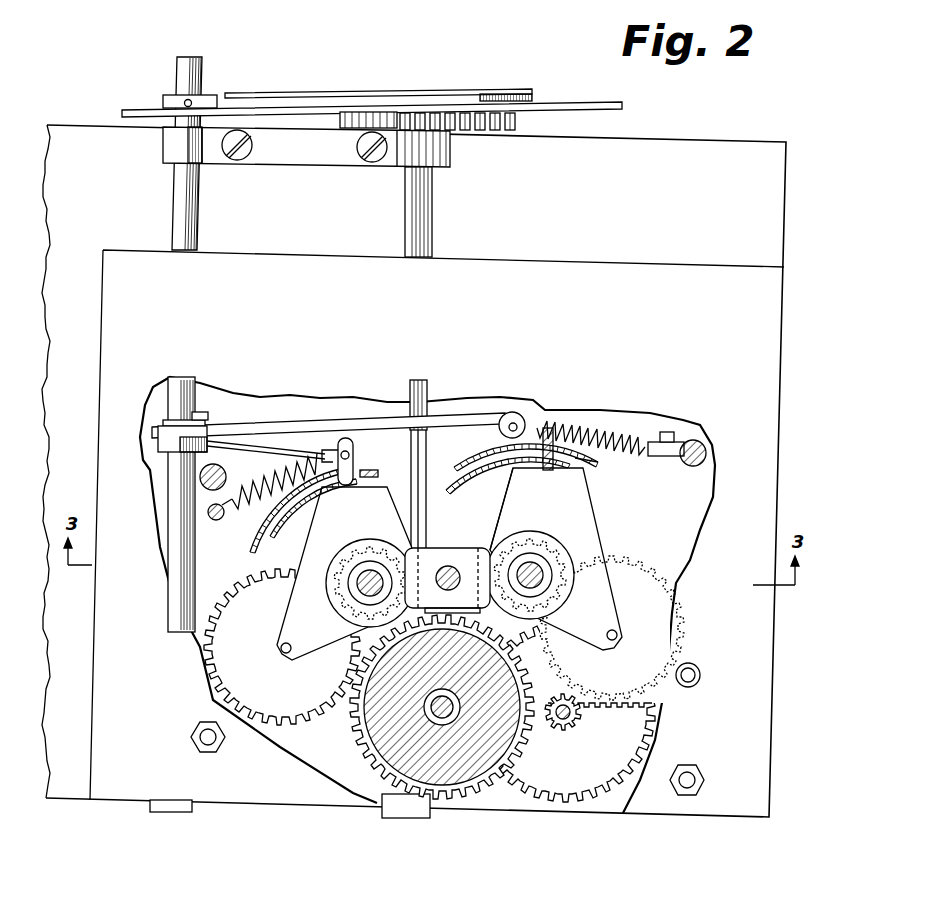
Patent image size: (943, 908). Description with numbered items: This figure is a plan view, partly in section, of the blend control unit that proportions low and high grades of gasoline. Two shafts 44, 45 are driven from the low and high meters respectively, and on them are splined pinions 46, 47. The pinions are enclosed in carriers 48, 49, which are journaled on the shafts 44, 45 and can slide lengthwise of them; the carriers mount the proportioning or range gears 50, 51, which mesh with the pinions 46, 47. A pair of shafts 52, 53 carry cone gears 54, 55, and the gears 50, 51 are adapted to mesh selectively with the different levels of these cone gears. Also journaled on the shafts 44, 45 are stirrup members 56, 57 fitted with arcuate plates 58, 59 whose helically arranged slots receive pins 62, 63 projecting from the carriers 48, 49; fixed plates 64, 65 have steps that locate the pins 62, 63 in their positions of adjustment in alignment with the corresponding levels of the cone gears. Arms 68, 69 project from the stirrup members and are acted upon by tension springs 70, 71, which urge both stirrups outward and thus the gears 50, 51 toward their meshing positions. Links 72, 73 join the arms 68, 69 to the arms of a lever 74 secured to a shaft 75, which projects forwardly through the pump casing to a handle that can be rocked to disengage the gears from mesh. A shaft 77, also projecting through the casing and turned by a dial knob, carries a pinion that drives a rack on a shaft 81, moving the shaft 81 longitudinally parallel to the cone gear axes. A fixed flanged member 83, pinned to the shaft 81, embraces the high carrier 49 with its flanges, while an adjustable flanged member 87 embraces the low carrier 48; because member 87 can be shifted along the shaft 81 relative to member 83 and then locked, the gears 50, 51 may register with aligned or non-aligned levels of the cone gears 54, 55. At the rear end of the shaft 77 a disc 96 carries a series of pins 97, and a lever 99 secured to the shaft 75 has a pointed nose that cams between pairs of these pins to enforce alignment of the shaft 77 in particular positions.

The shaft 44 is at (360, 587).
The shaft 45 is at (543, 582).
The pinion 46 is at (362, 545).
The pinion 47 is at (527, 552).
The carrier 48 is at (311, 554).
The carrier 49 is at (582, 512).
The proportioning gear 50 is at (303, 725).
The proportioning gear 51 is at (610, 560).
The shaft 52 is at (440, 707).
The shaft 53 is at (563, 722).
The cone gear 54 is at (465, 758).
The cone gear 55 is at (612, 740).
The stirrup member 56 is at (303, 520).
The stirrup member 57 is at (492, 503).
The arcuate plate 58 is at (370, 472).
The arcuate plate 59 is at (453, 483).
The pin 62 is at (350, 445).
The pin 63 is at (548, 448).
The fixed plate 64 is at (253, 537).
The fixed plate 65 is at (573, 468).
The arm 68 is at (333, 463).
The arm 69 is at (488, 445).
The tension spring 70 is at (238, 494).
The tension spring 71 is at (613, 440).
The link 72 is at (287, 447).
The link 73 is at (452, 430).
The lever 74 is at (202, 437).
The shaft 75 is at (175, 515).
The shaft 77 is at (423, 205).
The shaft 81 is at (452, 564).
The fixed flanged member 83 is at (420, 556).
The adjustable flanged member 87 is at (413, 557).
The disc 96 is at (507, 95).
The pins 97 is at (512, 127).
The lever 99 is at (267, 118).